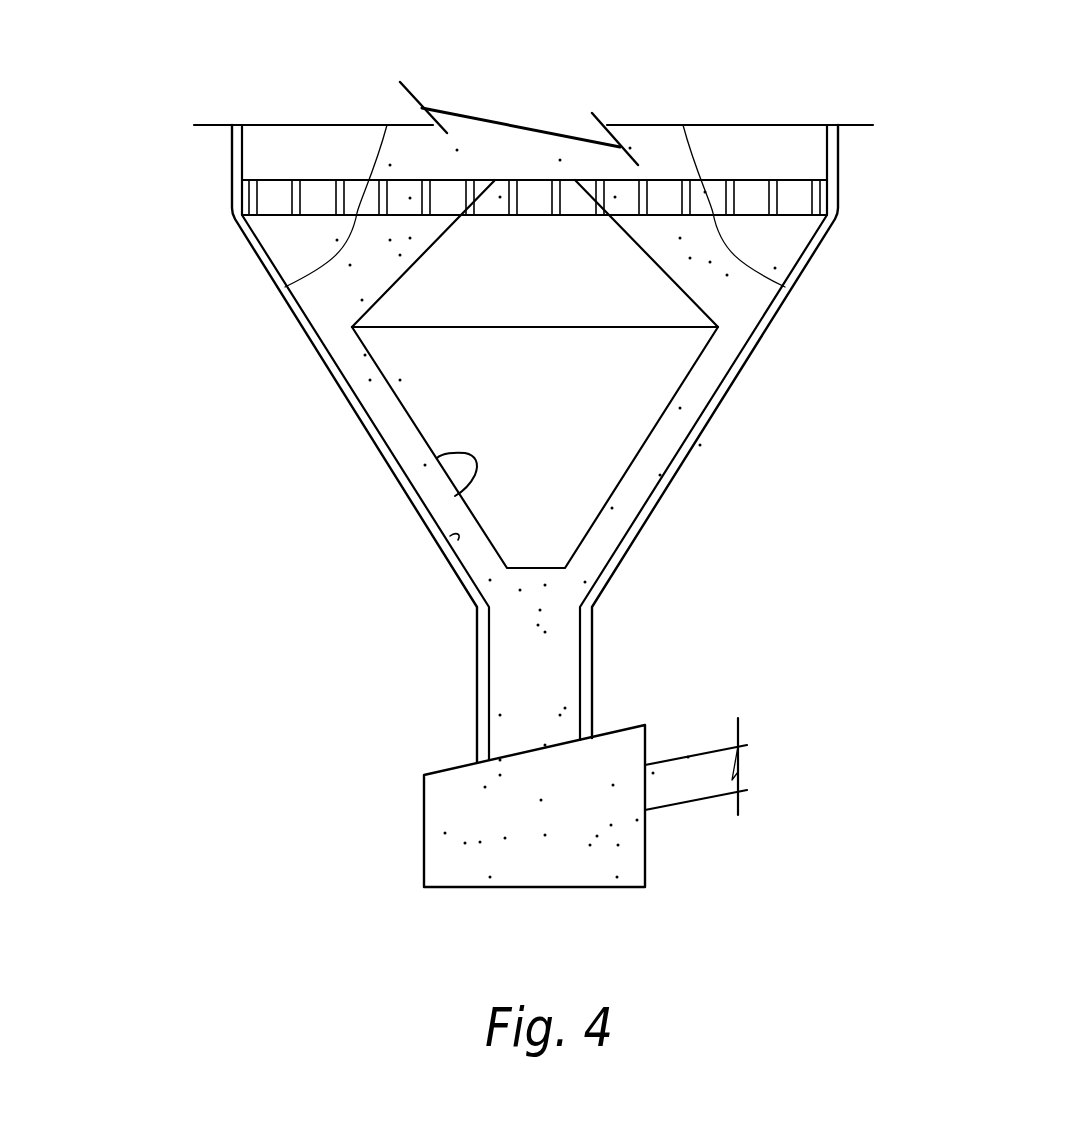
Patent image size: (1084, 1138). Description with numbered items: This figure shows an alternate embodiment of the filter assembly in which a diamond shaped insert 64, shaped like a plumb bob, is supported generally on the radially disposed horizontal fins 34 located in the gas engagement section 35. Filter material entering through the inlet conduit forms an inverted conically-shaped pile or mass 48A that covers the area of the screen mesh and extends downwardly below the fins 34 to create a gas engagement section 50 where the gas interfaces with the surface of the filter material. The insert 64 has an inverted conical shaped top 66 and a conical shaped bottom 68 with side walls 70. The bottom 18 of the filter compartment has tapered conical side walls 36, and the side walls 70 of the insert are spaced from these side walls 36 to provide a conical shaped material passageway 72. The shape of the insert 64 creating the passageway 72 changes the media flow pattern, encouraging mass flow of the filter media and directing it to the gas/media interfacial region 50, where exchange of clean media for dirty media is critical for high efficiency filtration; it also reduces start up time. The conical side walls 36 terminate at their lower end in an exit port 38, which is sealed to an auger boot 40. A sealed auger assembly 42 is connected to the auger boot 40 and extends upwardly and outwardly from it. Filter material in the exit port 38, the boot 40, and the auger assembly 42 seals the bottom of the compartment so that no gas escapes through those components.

The bottom 18 is at (382, 447).
The horizontal fins 34 is at (337, 197).
The gas engagement section 35 is at (280, 160).
The conical side walls 36 is at (458, 540).
The exit port 38 is at (482, 665).
The auger boot 40 is at (443, 780).
The auger assembly 42 is at (702, 747).
The mass of filter material 48A is at (520, 147).
The gas engagement section 50 is at (305, 250).
The diamond shaped insert 64 is at (615, 392).
The inverted conical shaped top 66 is at (608, 302).
The conical shaped bottom 68 is at (602, 453).
The side walls 70 is at (455, 496).
The material passageway 72 is at (368, 383).